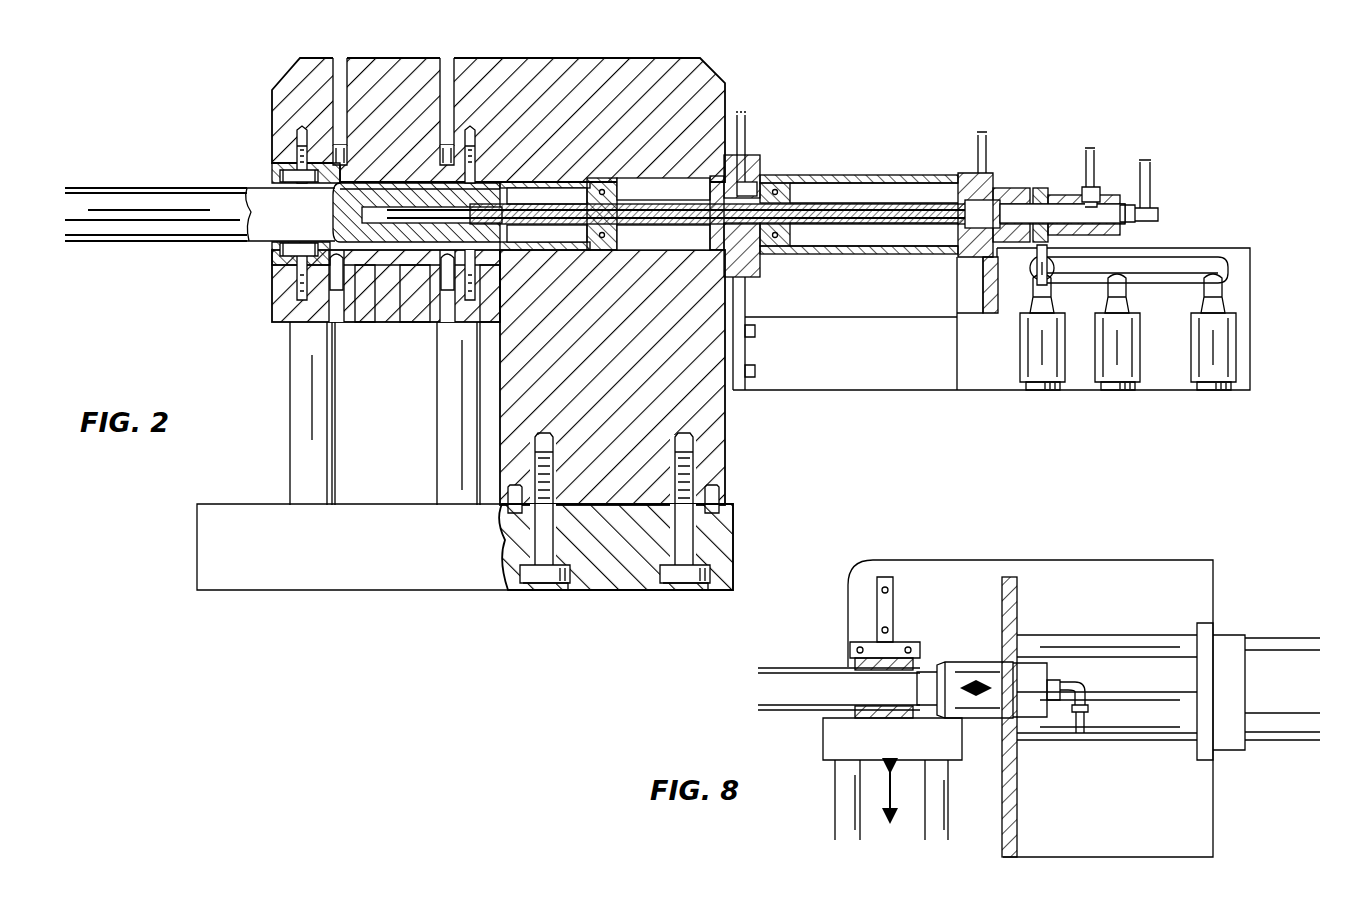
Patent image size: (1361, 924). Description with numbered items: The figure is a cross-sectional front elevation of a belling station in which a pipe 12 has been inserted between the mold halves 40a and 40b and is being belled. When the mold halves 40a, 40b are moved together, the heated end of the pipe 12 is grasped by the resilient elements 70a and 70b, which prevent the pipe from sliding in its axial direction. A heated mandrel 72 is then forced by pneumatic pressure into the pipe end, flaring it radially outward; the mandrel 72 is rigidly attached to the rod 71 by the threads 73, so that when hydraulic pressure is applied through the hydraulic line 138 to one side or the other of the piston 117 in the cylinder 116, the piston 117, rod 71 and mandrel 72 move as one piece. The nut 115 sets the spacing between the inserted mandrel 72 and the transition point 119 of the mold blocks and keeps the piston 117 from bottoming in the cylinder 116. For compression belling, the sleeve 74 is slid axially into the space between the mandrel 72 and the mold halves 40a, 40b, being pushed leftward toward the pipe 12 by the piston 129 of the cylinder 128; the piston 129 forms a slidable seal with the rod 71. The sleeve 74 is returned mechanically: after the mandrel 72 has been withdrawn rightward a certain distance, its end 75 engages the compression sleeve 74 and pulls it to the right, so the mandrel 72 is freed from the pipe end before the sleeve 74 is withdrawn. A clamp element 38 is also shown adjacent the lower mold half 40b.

The pipe 12 is at (200, 178).
The mold half 40a is at (283, 168).
The mold half 40b is at (248, 268).
The clamp 38 is at (272, 248).
The resilient element 70a is at (280, 272).
The resilient element 70b is at (318, 268).
The mandrel 72 is at (340, 200).
The transition point 119 is at (372, 250).
The sleeve 74 is at (417, 250).
The threads 73 is at (487, 250).
The end 75 is at (512, 200).
The piston 129 is at (618, 195).
The cylinder 128 is at (657, 242).
The hydraulic line 138 is at (746, 158).
The piston 117 is at (806, 195).
The cylinder 116 is at (855, 193).
The rod 71 is at (914, 200).
The nut 115 is at (1008, 188).